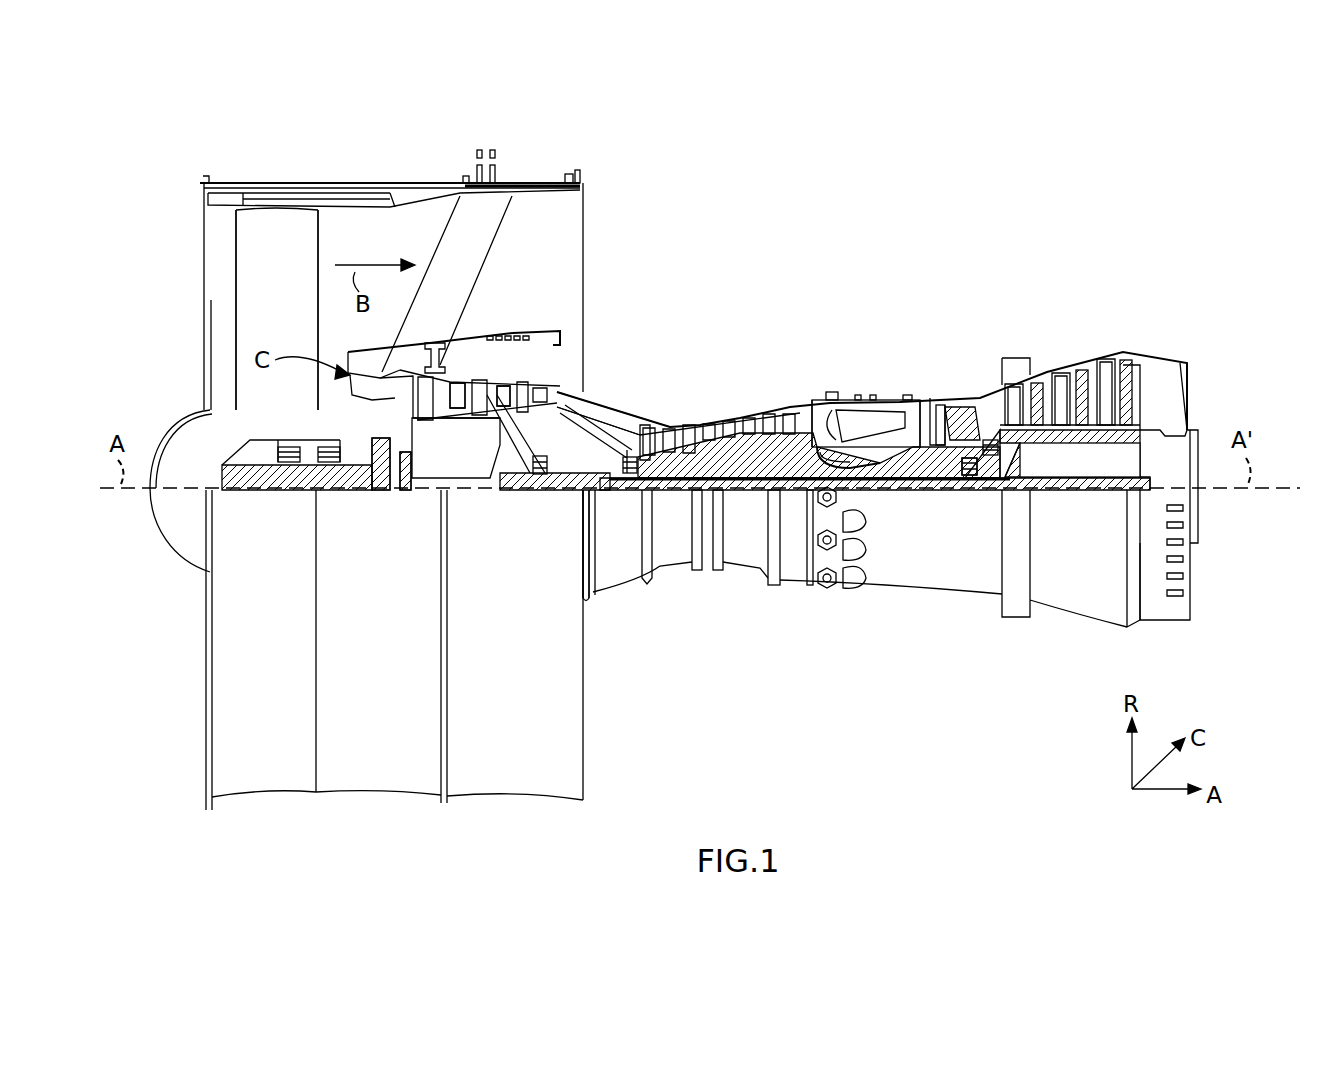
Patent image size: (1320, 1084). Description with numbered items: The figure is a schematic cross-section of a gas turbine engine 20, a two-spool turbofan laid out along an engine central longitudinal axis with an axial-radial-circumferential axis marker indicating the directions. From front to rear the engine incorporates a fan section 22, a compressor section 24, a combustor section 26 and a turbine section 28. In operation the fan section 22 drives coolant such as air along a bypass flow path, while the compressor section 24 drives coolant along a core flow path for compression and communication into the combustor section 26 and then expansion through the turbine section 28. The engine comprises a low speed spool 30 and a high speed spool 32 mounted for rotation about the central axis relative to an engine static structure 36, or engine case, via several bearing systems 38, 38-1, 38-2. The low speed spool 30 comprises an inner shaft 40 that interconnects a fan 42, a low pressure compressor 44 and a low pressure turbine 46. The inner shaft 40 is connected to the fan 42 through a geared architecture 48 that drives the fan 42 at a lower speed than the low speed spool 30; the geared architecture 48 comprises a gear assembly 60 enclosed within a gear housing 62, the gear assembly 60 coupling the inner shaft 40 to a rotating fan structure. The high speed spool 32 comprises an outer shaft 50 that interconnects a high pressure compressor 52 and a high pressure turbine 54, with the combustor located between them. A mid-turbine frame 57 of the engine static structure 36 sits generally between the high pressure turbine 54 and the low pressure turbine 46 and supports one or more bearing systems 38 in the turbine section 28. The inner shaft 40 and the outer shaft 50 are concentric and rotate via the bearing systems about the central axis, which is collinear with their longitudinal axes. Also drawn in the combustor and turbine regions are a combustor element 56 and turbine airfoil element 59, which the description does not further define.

The gas turbine engine 20 is at (710, 495).
The fan section 22 is at (366, 465).
The compressor section 24 is at (615, 335).
The combustor section 26 is at (813, 290).
The turbine section 28 is at (1057, 431).
The low speed spool 30 is at (753, 512).
The high speed spool 32 is at (788, 455).
The engine static structure 36 is at (618, 411).
The bearing system 38 is at (966, 482).
The bearing system 38-1 is at (290, 477).
The bearing system 38-2 is at (541, 478).
The inner shaft 40 is at (626, 495).
The fan 42 is at (262, 309).
The low pressure compressor 44 is at (515, 392).
The low pressure turbine 46 is at (1081, 369).
The geared architecture 48 is at (405, 520).
The outer shaft 50 is at (858, 470).
The high pressure compressor 52 is at (745, 430).
The high pressure turbine 54 is at (940, 404).
The combustor 56 is at (862, 413).
The mid-turbine frame 57 is at (973, 405).
The airfoils 59 is at (1000, 400).
The gear assembly 60 is at (411, 470).
The gear housing 62 is at (410, 440).